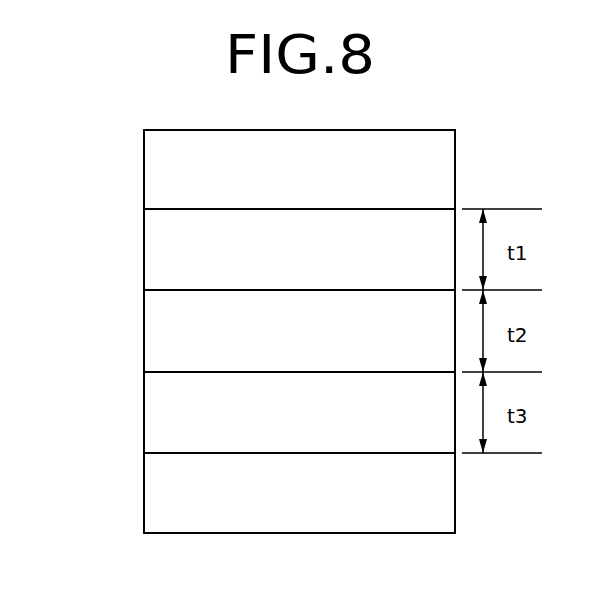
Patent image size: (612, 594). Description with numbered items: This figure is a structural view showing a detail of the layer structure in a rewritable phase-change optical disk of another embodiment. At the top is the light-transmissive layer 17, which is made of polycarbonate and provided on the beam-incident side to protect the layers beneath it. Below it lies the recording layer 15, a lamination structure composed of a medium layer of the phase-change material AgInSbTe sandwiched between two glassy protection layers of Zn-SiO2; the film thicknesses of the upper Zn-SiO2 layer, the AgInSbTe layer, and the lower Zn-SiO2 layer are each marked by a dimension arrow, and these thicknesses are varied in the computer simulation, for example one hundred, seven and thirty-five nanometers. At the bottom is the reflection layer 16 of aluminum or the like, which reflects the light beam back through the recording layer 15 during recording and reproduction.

The light-transmissive layer 17 is at (175, 167).
The recording layer 15 is at (117, 230).
The reflection layer 16 is at (173, 497).